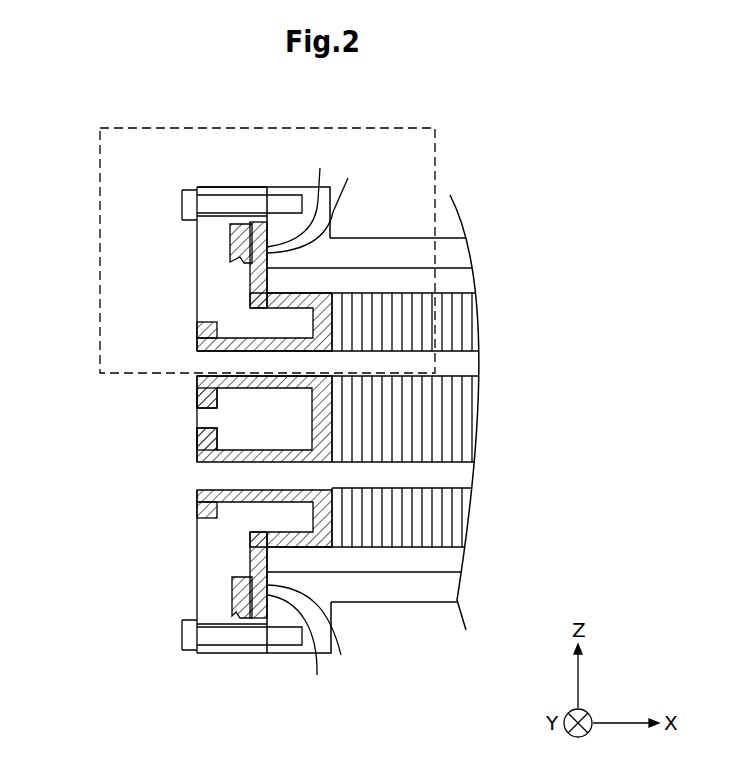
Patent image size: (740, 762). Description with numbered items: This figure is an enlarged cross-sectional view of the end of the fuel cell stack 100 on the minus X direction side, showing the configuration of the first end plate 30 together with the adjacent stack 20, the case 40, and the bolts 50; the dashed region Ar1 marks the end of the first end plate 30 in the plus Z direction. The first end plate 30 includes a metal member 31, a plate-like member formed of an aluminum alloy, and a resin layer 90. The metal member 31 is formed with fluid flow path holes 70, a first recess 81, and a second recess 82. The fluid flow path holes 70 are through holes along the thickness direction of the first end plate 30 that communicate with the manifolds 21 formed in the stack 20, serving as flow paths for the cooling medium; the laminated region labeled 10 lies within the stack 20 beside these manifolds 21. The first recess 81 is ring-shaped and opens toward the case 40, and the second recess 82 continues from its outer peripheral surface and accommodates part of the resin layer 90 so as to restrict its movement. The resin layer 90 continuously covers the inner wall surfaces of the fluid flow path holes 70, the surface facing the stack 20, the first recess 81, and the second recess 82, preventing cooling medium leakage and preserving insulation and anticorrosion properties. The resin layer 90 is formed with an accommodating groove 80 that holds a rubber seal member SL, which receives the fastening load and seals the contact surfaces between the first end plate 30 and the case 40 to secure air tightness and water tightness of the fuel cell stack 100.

The fuel cell stack 100 is at (85, 172).
The region Ar1 is at (437, 155).
The first end plate 30 is at (202, 184).
The metal member 31 is at (223, 186).
The bolts 50 is at (182, 202).
The second recess 82 is at (230, 228).
The first recess 81 is at (240, 272).
The fluid flow path holes 70 is at (198, 365).
The resin layer 90 is at (197, 327).
The case 40 is at (360, 254).
The rotor core 10 is at (400, 540).
The manifolds 21 is at (457, 363).
The stack 20 is at (452, 637).
The accommodating groove 80 is at (325, 424).
The seal member SL is at (303, 424).